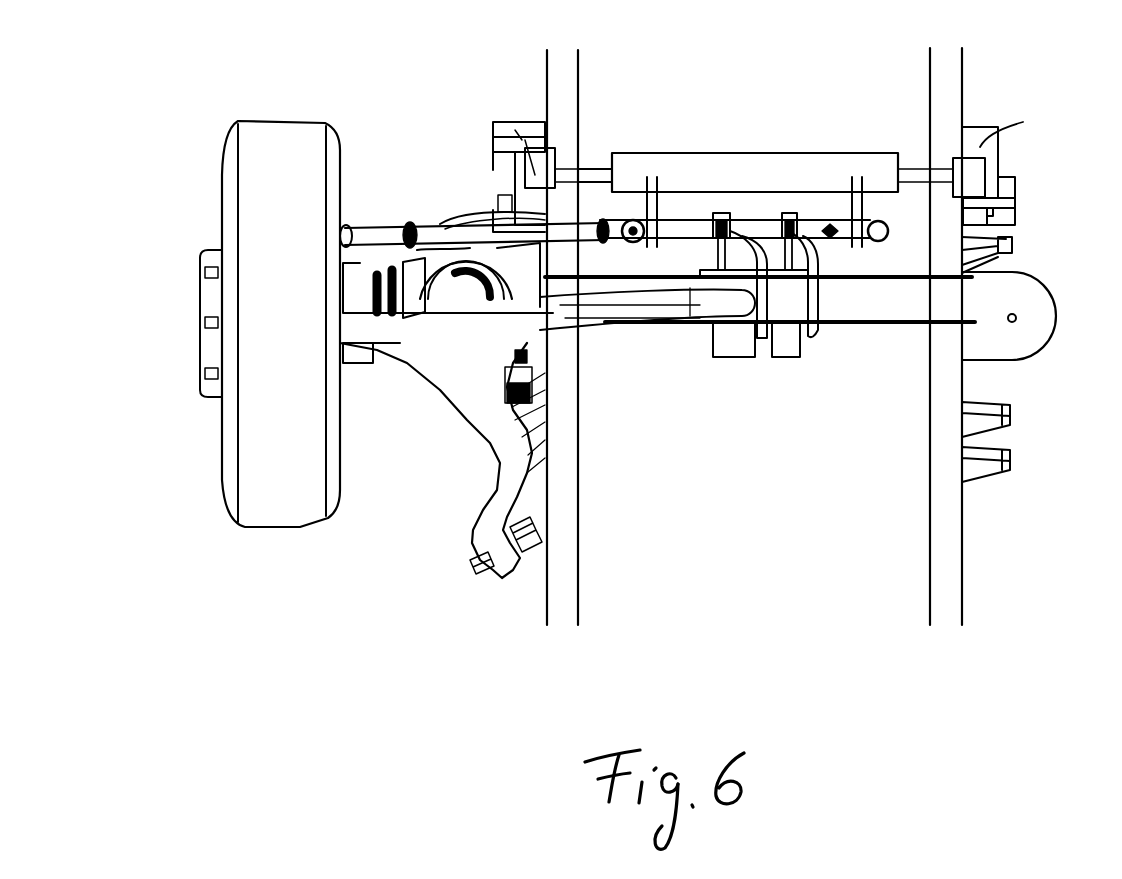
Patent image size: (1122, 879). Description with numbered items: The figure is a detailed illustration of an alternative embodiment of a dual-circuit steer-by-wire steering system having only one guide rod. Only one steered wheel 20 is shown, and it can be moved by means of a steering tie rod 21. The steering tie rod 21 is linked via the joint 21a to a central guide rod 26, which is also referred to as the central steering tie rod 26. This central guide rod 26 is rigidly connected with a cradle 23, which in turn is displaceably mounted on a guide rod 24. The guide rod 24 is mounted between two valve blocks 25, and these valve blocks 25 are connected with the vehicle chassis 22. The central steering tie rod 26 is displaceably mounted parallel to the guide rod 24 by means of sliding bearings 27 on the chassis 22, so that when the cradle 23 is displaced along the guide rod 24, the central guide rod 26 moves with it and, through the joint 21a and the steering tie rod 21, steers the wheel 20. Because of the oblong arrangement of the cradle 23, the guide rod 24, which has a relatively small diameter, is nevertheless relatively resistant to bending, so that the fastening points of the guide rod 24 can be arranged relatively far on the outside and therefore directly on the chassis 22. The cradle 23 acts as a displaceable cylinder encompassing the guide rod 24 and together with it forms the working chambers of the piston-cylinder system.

The steered wheel 20 is at (258, 217).
The steering tie rod 21 is at (432, 230).
The joint 21a is at (633, 230).
The vehicle chassis 22 is at (567, 397).
The cradle 23 is at (750, 168).
The guide rod 24 is at (583, 170).
The valve block 25 is at (540, 163).
The central guide rod 26 is at (833, 253).
The sliding bearings 27 is at (807, 250).